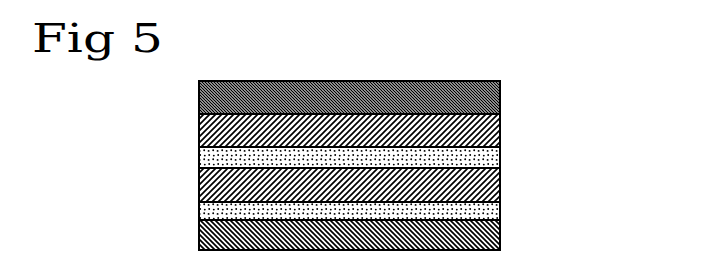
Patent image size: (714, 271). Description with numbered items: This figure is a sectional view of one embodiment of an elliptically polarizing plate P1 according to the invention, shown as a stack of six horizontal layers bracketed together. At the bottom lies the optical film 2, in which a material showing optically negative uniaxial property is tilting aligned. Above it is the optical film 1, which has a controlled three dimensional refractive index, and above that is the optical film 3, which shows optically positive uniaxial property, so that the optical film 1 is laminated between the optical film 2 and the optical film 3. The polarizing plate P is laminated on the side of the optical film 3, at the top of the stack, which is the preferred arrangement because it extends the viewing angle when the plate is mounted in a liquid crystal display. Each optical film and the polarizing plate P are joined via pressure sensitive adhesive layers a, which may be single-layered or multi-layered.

The polarizing plate P is at (499, 102).
The optical film 3 is at (499, 131).
The pressure sensitive adhesive layer a is at (499, 156).
The optical film 1 is at (499, 192).
The optical film 2 is at (381, 235).
The elliptically polarizing plate P1 is at (434, 170).